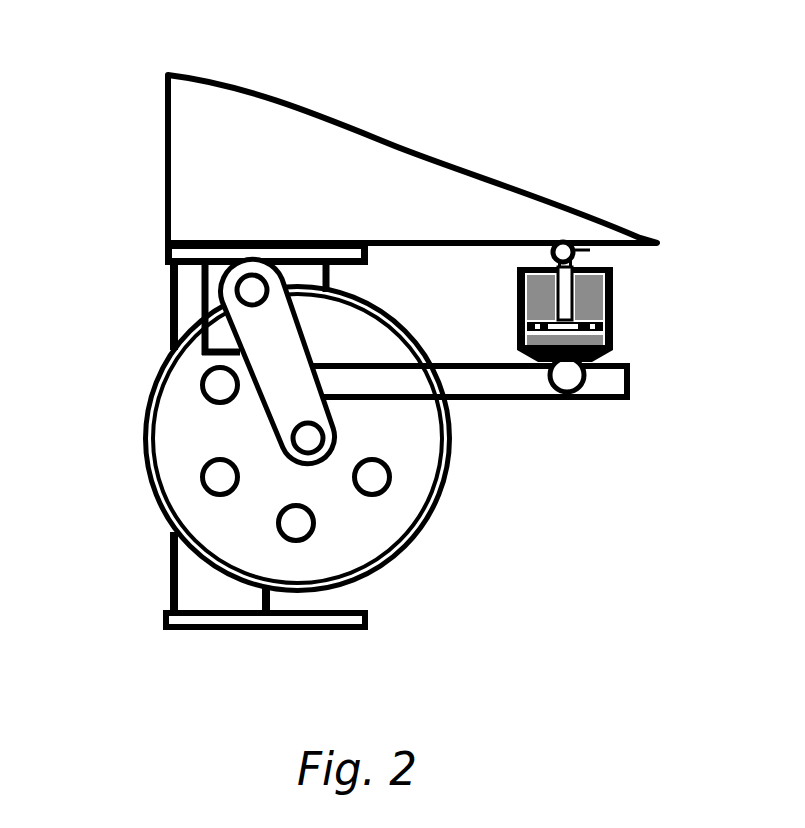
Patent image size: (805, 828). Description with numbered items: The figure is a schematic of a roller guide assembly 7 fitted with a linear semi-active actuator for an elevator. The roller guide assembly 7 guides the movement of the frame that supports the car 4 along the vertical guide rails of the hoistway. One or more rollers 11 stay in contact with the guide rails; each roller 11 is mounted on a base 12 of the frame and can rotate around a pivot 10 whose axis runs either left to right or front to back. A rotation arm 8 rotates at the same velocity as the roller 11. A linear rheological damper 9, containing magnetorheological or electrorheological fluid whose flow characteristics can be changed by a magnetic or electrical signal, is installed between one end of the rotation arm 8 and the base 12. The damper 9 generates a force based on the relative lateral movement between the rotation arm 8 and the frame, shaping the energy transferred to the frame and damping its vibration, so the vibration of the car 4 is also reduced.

The car 4 is at (403, 208).
The roller guide assembly 7 is at (137, 522).
The rotation arm 8 is at (468, 380).
The linear rheological damper 9 is at (573, 290).
The pivot 10 is at (250, 288).
The roller 11 is at (183, 383).
The base 12 is at (370, 250).